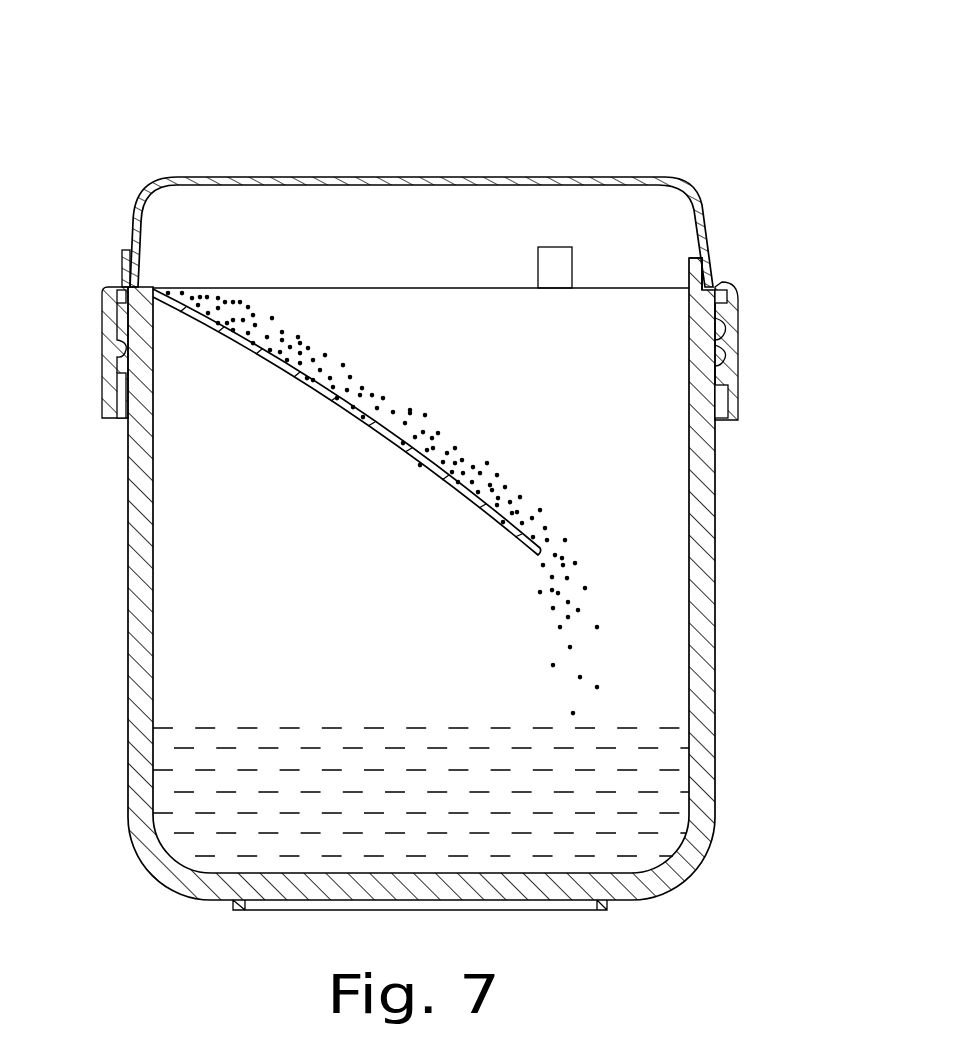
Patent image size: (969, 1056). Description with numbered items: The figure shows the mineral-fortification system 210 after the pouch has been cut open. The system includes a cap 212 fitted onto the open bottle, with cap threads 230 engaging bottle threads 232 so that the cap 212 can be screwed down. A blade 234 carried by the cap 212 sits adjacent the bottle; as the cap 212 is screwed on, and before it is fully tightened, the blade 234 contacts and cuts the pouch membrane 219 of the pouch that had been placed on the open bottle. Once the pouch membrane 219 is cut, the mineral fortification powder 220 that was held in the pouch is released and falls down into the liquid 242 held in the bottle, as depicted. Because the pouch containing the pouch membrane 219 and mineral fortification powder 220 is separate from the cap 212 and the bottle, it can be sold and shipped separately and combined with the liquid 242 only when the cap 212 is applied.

The mineral-fortification system 210 is at (290, 94).
The cap 212 is at (713, 258).
The pouch membrane 219 is at (353, 416).
The mineral fortification powder 220 is at (490, 463).
The cap threads 230 is at (732, 343).
The bottle threads 232 is at (732, 357).
The blade 234 is at (692, 277).
The liquid 242 is at (673, 761).